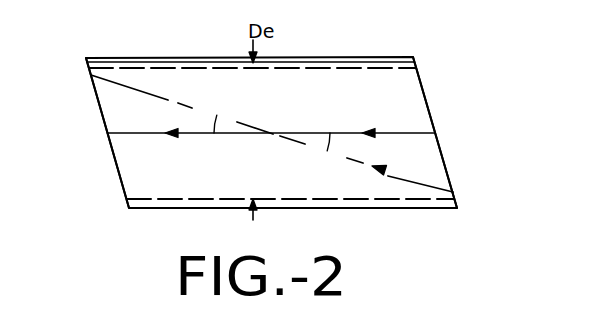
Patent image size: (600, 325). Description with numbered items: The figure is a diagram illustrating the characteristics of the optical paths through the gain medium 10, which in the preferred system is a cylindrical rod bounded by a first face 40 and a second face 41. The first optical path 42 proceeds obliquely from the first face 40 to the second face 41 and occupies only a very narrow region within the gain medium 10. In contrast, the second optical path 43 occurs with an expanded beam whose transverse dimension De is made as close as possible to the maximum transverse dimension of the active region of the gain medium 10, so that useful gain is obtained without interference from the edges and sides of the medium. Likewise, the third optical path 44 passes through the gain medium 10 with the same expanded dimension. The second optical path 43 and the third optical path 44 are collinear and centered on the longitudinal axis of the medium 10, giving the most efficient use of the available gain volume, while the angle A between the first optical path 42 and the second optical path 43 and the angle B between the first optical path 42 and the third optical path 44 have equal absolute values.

The gain medium 10 is at (333, 57).
The first face 40 is at (423, 87).
The second face 41 is at (118, 168).
The first optical path 42 is at (381, 167).
The second optical path 43 is at (173, 130).
The third optical path 44 is at (372, 127).